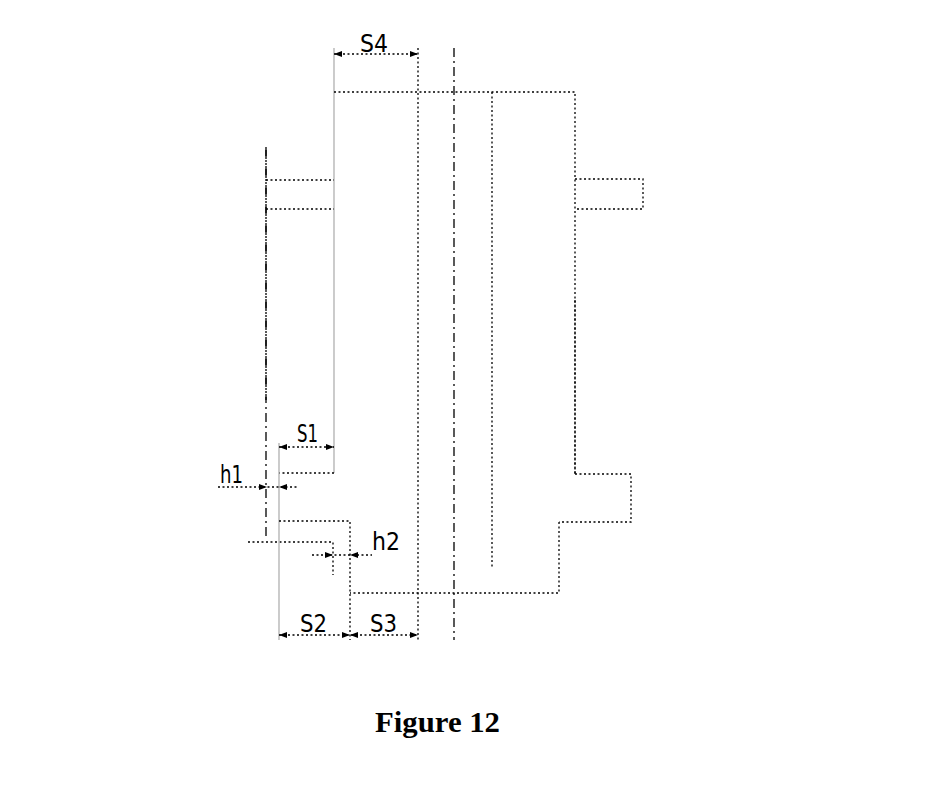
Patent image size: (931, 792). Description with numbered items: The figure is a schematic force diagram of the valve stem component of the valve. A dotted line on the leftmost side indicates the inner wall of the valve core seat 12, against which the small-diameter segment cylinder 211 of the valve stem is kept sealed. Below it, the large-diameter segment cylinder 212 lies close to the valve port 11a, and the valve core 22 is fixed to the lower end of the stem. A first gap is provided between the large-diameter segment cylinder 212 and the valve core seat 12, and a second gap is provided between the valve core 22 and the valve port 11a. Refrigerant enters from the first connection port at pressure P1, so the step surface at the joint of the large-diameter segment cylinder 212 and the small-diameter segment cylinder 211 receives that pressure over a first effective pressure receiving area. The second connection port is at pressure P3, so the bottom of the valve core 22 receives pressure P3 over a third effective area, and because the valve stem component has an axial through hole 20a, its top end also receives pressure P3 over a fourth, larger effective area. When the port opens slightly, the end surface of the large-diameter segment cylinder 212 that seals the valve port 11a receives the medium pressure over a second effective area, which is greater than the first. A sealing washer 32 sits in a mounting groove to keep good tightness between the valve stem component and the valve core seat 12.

The valve port 11a is at (330, 572).
The valve core seat 12 is at (263, 303).
The sealing washer 32 is at (297, 192).
The axial through hole 20a is at (472, 238).
The small-diameter segment cylinder 211 is at (575, 372).
The large-diameter segment cylinder 212 is at (631, 497).
The valve core 22 is at (559, 570).
The pressure at the first connection port P1 is at (283, 342).
The pressure at the second connection port P3 is at (181, 555).